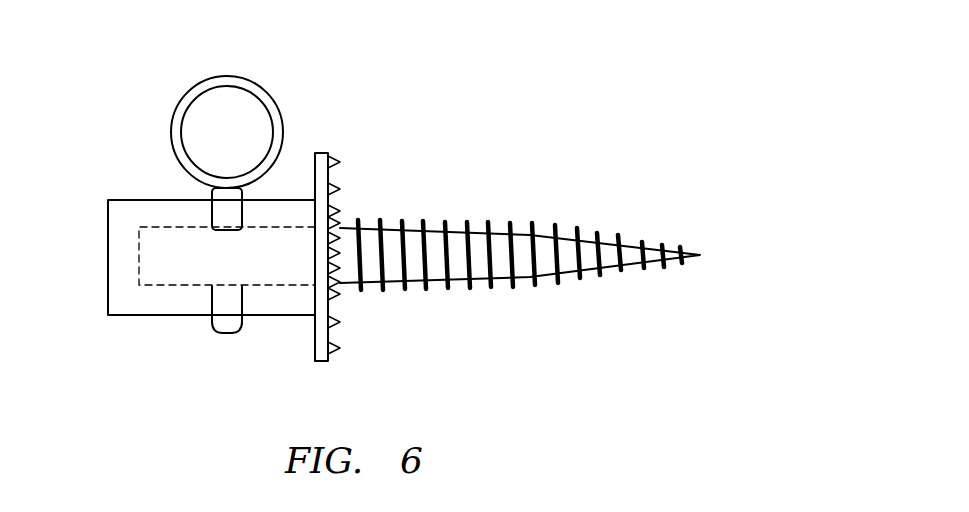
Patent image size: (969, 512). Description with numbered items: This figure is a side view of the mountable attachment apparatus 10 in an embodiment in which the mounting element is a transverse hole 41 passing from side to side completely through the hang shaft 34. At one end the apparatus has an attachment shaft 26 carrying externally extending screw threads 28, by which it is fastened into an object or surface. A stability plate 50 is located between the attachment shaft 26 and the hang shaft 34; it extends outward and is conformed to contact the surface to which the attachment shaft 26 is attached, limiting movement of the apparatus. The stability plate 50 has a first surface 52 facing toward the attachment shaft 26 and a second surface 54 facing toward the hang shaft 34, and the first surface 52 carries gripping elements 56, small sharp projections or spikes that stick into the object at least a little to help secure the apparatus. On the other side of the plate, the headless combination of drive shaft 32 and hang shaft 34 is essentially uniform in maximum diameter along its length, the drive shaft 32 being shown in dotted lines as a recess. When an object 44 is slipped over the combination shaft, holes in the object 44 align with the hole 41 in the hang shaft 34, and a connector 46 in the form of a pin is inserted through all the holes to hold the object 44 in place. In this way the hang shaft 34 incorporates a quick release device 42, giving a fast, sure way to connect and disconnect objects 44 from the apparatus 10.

The mountable attachment apparatus 10 is at (647, 121).
The attachment shaft 26 is at (526, 278).
The screw threads 28 is at (403, 214).
The drive shaft 32 is at (147, 253).
The hang shaft 34 is at (288, 237).
The transverse hole 41 is at (217, 231).
The quick release device 42 is at (253, 80).
The object 44 is at (108, 200).
The connector 46 is at (197, 84).
The stability plate 50 is at (326, 362).
The first surface 52 is at (332, 176).
The second surface 54 is at (313, 348).
The gripping element 56 is at (334, 163).